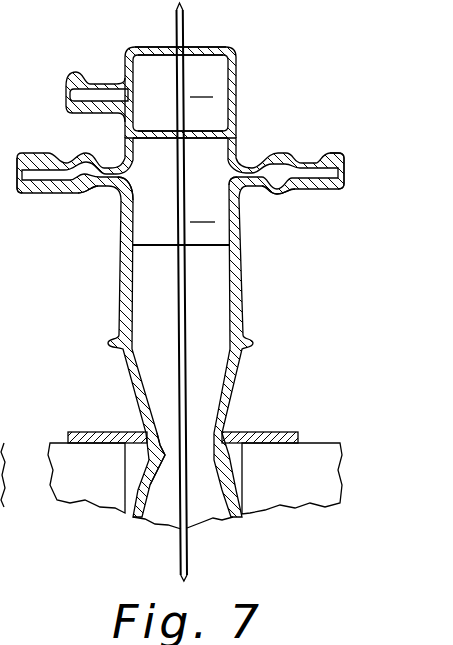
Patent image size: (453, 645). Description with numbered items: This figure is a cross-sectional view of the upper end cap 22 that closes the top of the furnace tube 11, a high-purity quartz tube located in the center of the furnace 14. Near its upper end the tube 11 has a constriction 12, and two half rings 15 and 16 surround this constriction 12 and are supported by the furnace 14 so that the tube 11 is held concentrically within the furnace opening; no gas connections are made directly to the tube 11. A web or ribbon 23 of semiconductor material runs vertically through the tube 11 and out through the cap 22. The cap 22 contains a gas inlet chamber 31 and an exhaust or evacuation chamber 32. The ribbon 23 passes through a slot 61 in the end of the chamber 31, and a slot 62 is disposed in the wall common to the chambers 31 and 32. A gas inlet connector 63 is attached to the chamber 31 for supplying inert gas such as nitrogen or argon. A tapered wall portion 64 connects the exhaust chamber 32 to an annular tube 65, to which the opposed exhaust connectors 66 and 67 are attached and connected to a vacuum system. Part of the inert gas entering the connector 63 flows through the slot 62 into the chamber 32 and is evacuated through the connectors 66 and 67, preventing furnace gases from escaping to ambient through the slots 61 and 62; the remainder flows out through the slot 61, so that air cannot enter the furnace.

The furnace tube 11 is at (134, 394).
The constriction 12 is at (148, 461).
The furnace 14 is at (96, 499).
The half ring 15 is at (96, 432).
The half ring 16 is at (288, 432).
The upper end cap 22 is at (237, 112).
The web or ribbon 23 is at (188, 548).
The gas inlet chamber 31 is at (204, 84).
The exhaust or evacuation chamber 32 is at (181, 221).
The slot 61 is at (173, 47).
The slot 62 is at (175, 132).
The gas inlet connector 63 is at (78, 72).
The tapered wall portion 64 is at (112, 184).
The annular tube 65 is at (84, 187).
The exhaust connector 66 is at (25, 194).
The exhaust connector 67 is at (330, 158).